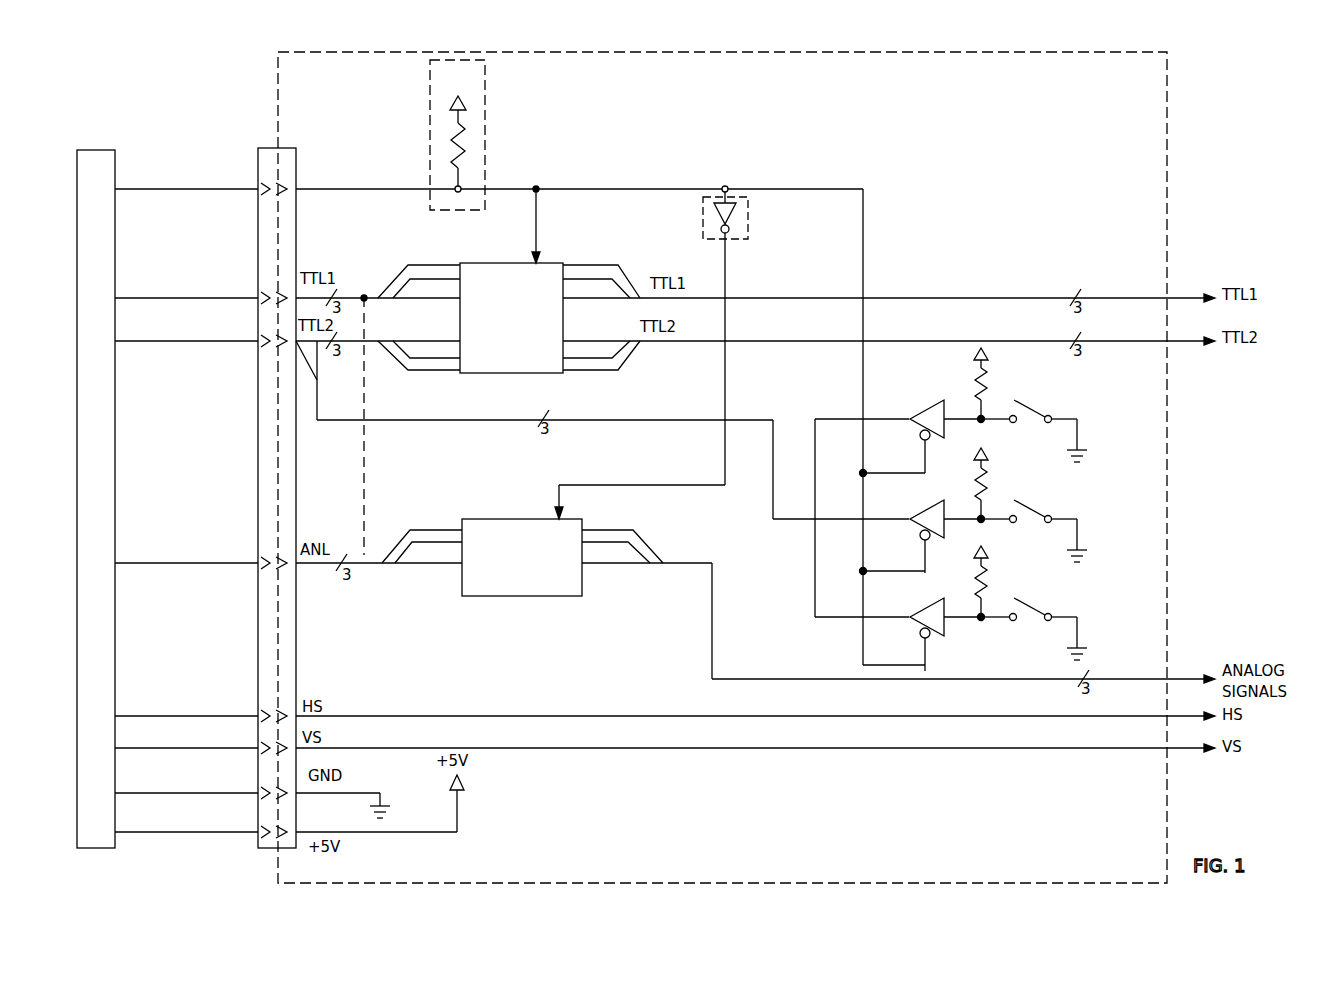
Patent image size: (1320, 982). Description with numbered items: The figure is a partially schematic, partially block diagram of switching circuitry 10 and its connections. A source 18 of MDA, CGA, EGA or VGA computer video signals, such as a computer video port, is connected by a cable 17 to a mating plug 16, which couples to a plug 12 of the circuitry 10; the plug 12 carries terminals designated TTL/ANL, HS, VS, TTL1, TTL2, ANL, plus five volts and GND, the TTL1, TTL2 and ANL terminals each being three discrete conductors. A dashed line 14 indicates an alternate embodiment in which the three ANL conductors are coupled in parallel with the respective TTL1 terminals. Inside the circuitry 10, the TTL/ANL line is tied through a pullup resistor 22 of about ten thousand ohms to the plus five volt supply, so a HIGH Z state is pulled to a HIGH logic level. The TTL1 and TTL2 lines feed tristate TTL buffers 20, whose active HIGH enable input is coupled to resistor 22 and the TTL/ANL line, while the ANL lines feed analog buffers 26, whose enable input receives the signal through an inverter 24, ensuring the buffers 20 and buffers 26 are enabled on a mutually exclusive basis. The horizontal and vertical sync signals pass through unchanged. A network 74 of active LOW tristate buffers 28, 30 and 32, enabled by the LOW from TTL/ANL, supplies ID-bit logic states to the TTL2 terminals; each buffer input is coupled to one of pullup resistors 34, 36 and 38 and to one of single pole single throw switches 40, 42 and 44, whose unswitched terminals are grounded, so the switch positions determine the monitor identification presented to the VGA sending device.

The switching circuitry 10 is at (1167, 117).
The plug 12 is at (296, 148).
The dashed line 14 is at (366, 484).
The mating plug 16 is at (258, 148).
The cable 17 is at (197, 848).
The source 18 is at (105, 128).
The TTL buffers 20 is at (472, 262).
The pullup resistor 22 is at (468, 143).
The inverter 24 is at (730, 212).
The analog buffers 26 is at (483, 518).
The tristate buffer 28 is at (919, 414).
The tristate buffer 30 is at (919, 514).
The tristate buffer 32 is at (919, 612).
The pullup resistor 34 is at (988, 382).
The pullup resistor 36 is at (988, 482).
The pullup resistor 38 is at (988, 580).
The single pole single throw switch 40 is at (1052, 392).
The single pole single throw switch 42 is at (1052, 492).
The single pole single throw switch 44 is at (1052, 590).
The network 74 is at (1061, 521).